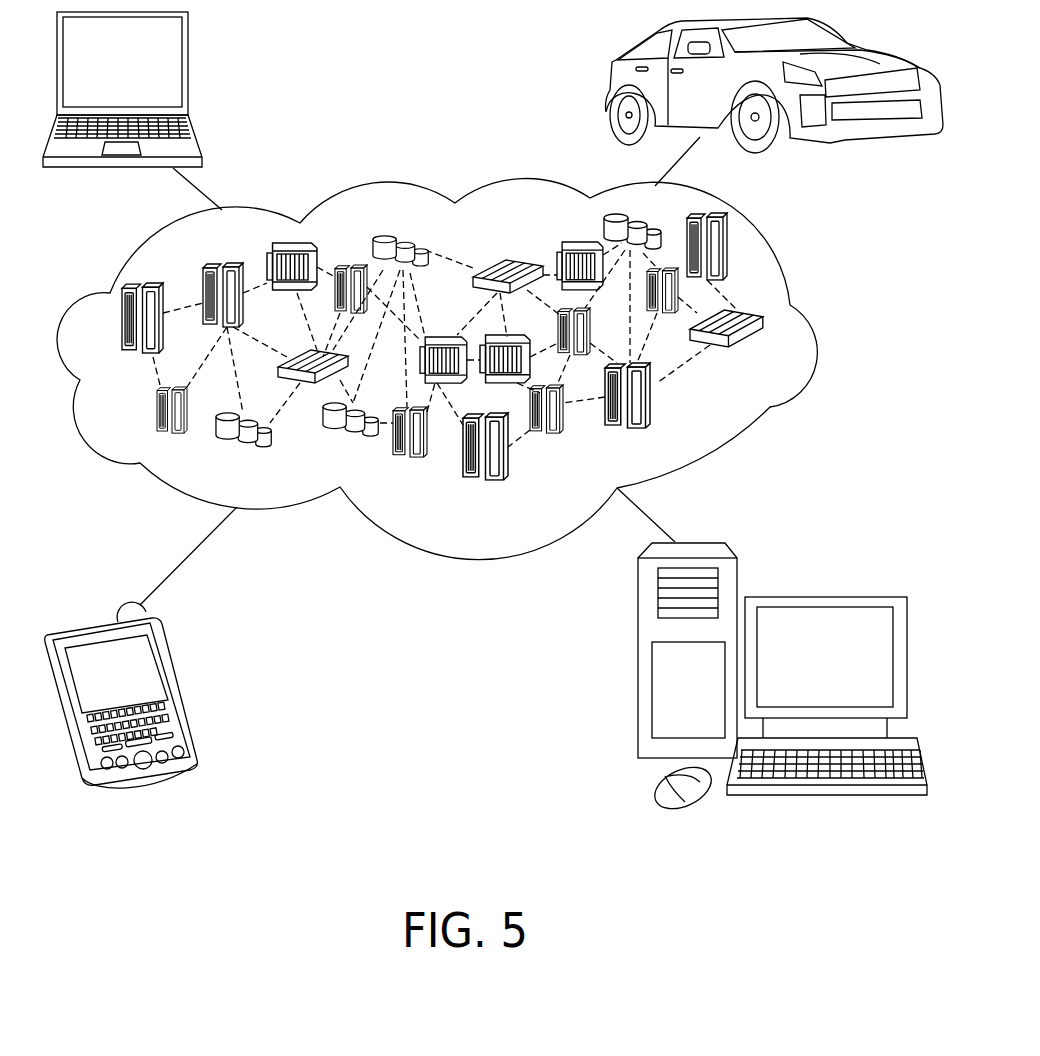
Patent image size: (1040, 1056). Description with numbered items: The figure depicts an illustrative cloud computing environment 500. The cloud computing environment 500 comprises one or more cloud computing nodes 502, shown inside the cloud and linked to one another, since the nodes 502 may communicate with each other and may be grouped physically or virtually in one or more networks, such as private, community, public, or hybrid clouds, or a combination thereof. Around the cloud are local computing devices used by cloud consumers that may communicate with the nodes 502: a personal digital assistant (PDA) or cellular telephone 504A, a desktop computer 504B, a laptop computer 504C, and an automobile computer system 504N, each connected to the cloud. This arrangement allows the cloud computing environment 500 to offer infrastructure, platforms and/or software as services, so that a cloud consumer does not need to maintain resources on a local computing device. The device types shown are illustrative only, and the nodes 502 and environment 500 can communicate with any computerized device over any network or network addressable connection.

The cloud computing environment 500 is at (773, 322).
The cloud computing nodes 502 is at (768, 353).
The personal digital assistant (PDA) or cellular telephone 504A is at (167, 652).
The desktop computer 504B is at (812, 597).
The laptop computer 504C is at (190, 47).
The automobile computer system 504N is at (610, 88).